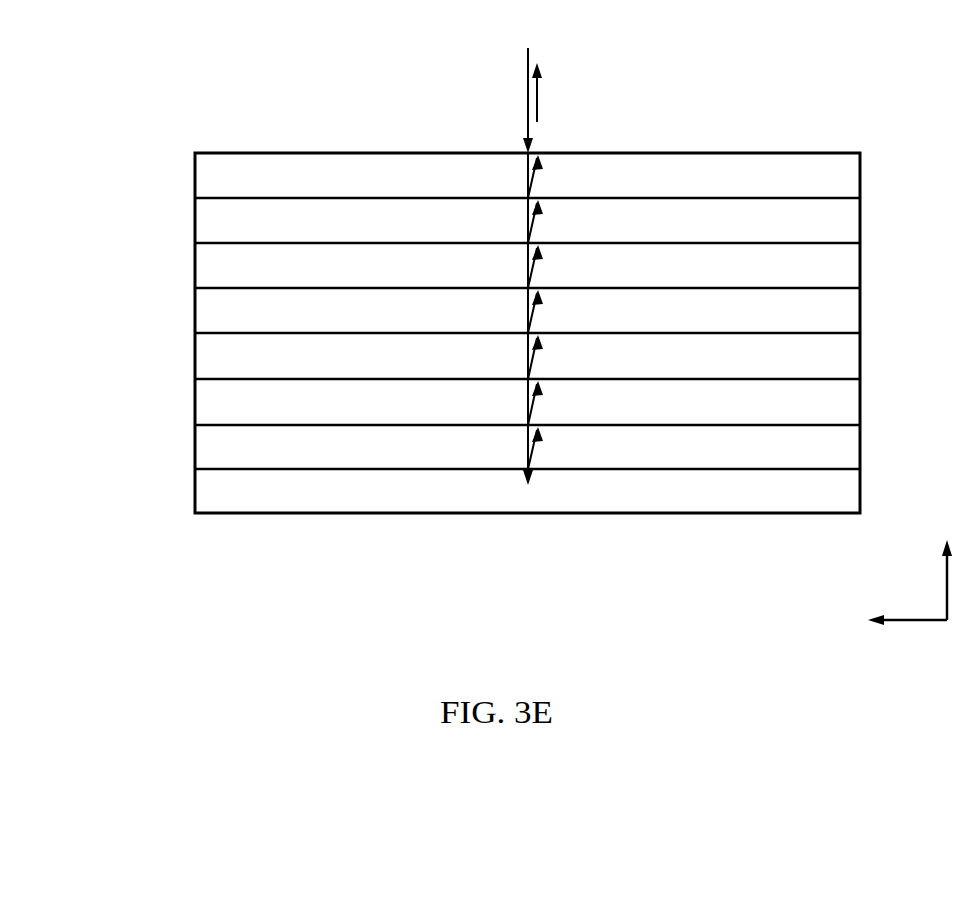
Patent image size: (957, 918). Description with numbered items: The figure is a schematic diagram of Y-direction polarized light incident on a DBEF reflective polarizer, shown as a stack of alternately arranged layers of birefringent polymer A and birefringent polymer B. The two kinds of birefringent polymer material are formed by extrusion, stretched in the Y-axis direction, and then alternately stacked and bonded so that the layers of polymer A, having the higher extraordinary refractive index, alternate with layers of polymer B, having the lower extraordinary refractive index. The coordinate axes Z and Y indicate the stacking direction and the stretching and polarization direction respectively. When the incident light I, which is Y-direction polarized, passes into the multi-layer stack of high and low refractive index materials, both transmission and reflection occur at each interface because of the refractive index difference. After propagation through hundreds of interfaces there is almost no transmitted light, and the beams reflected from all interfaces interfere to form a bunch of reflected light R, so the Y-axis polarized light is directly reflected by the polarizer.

The birefringent polymer A is at (243, 180).
The birefringent polymer B is at (243, 231).
The incident light I is at (527, 101).
The reflected light R is at (538, 122).
The Z axis Z is at (946, 561).
The Y axis Y is at (895, 622).